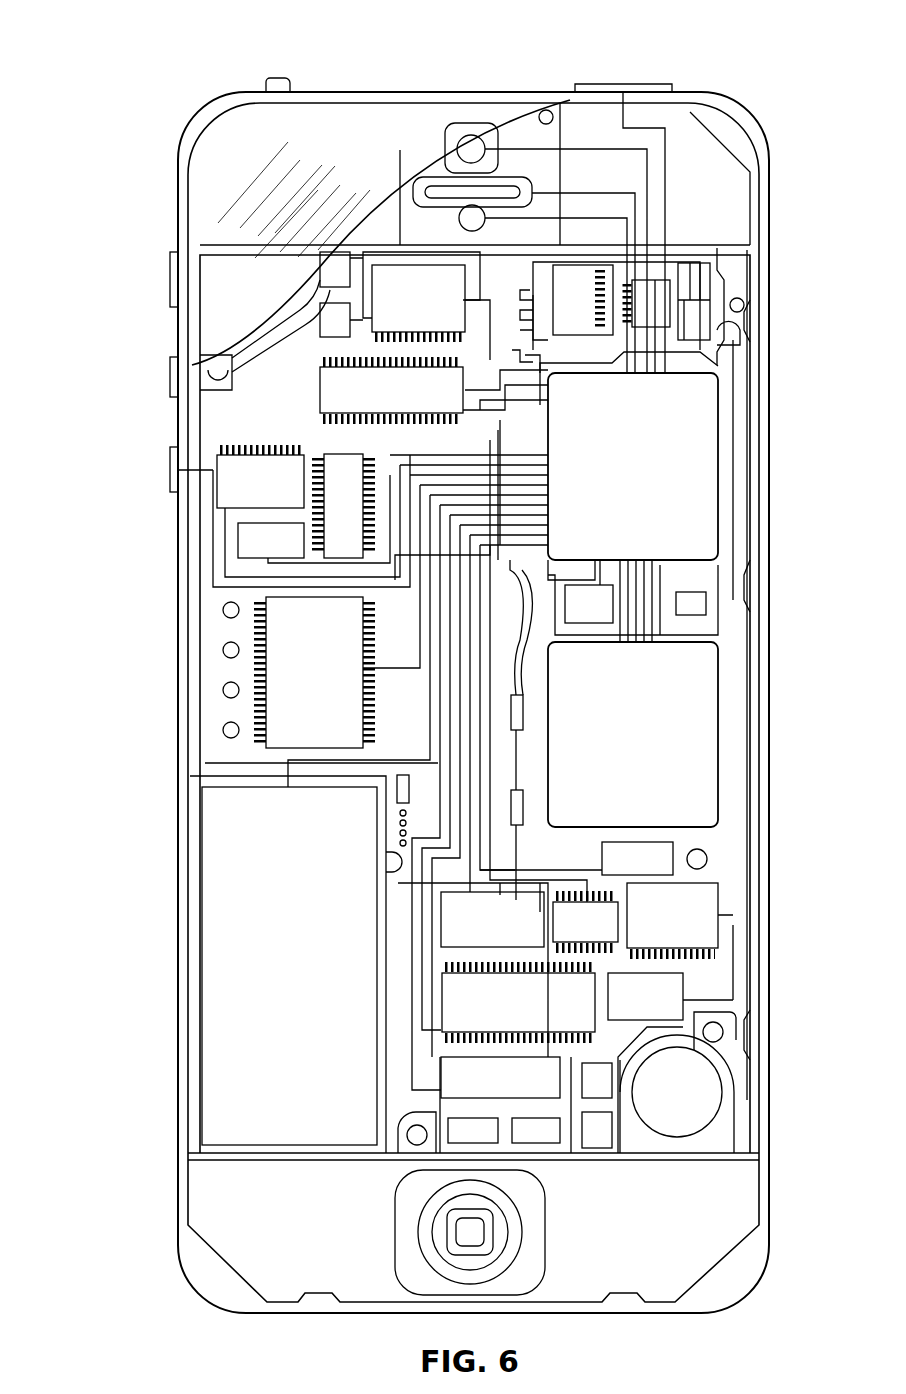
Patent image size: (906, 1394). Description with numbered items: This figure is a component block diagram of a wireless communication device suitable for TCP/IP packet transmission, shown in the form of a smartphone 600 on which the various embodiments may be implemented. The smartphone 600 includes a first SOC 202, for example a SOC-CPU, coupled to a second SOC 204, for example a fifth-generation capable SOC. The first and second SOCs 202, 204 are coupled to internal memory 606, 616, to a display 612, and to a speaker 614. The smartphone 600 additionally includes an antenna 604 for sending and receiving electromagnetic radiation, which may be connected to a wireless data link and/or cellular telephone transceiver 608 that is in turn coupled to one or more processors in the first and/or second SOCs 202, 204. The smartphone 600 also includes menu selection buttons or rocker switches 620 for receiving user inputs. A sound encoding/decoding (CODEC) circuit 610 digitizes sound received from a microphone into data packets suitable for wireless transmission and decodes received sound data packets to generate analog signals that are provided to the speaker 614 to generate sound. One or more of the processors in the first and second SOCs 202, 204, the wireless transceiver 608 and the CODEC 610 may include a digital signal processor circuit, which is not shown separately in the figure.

The smartphone 600 is at (88, 44).
The antenna 604 is at (262, 78).
The display 612 is at (205, 206).
The speaker 614 is at (428, 178).
The wireless data link and/or cellular telephone transceiver 608 is at (665, 285).
The menu selection buttons or rocker switches 620 is at (170, 367).
The sound encoding/decoding (CODEC) circuit 610 is at (418, 301).
The internal memory 606 is at (391, 390).
The first SOC 202 is at (633, 466).
The second SOC 204 is at (633, 734).
The internal memory 616 is at (518, 1002).